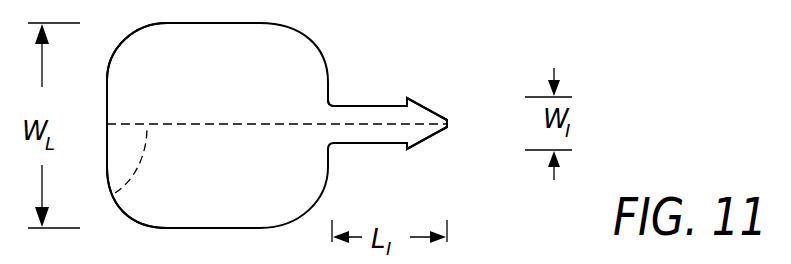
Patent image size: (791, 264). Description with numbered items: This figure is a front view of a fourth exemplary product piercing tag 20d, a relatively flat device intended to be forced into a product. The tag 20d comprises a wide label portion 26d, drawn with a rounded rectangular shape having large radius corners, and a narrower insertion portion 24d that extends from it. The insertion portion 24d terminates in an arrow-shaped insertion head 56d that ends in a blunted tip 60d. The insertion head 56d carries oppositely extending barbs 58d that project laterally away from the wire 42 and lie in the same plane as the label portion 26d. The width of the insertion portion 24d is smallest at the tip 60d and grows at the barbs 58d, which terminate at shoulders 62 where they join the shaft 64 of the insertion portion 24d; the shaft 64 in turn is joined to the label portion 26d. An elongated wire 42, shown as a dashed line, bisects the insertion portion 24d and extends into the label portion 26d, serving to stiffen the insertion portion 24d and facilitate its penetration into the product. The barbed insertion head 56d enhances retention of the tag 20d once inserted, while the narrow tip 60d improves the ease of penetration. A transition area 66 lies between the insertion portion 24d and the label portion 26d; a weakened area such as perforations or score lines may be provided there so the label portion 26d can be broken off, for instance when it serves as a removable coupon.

The tag 20d is at (440, 70).
The insertion portion 24d is at (374, 132).
The label portion 26d is at (138, 60).
The wire 42 is at (118, 192).
The insertion head 56d is at (412, 144).
The barbs 58d is at (408, 98).
The tip 60d is at (449, 125).
The shoulders 62 is at (404, 103).
The shaft 64 is at (352, 132).
The transition area 66 is at (336, 128).